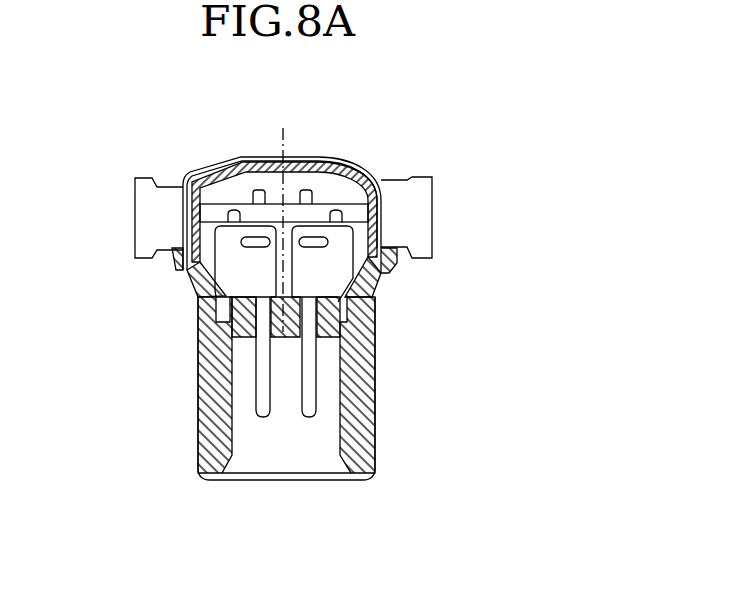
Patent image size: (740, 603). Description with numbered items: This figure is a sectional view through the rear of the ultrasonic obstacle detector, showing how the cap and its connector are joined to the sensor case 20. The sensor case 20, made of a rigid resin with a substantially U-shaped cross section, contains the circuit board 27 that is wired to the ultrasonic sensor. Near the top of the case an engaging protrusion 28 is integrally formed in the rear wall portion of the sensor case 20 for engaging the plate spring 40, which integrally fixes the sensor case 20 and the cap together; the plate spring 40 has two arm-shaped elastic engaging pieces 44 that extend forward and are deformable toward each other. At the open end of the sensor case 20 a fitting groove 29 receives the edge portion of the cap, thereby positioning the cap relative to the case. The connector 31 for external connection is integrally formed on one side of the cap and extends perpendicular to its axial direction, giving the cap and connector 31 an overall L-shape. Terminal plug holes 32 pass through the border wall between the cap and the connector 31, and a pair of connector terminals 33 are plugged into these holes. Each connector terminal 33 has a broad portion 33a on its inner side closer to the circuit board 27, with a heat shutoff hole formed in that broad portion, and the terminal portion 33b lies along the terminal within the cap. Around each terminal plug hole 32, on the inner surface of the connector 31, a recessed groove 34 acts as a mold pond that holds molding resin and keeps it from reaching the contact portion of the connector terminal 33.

The sensor case 20 is at (246, 157).
The circuit board 27 is at (350, 212).
The engaging protrusion 28 is at (292, 154).
The fitting groove 29 is at (185, 287).
The connector for external connection 31 is at (198, 428).
The terminal plug holes 32 is at (340, 337).
The connector terminals 33 is at (320, 388).
The broad portion 33a is at (317, 280).
The pin contact portion 33b is at (318, 244).
The recessed groove 34 is at (270, 367).
The plate spring 40 is at (188, 172).
The elastic engaging pieces 44 is at (145, 216).